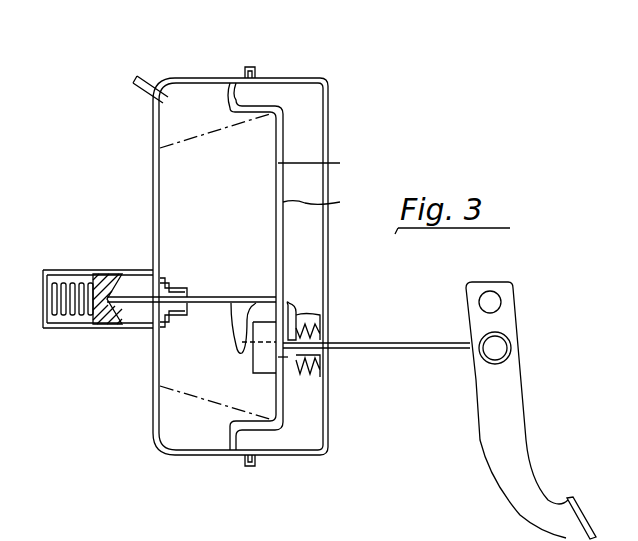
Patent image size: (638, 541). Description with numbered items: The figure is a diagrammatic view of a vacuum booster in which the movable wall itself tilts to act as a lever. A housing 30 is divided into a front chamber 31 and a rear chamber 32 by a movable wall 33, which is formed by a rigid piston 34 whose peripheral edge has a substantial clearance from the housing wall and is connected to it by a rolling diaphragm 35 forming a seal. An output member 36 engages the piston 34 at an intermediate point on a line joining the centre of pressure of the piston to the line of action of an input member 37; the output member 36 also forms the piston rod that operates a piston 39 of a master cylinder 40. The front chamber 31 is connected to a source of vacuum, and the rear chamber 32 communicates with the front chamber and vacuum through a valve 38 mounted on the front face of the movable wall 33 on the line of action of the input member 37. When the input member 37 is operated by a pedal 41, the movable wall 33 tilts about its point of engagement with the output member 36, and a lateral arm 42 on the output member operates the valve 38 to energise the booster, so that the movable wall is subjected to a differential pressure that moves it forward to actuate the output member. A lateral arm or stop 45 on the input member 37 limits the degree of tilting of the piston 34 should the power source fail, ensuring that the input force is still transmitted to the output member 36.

The housing 30 is at (158, 443).
The front chamber 31 is at (228, 262).
The rear chamber 32 is at (312, 261).
The movable wall 33 is at (325, 201).
The rigid piston 34 is at (323, 162).
The rolling diaphragm 35 is at (258, 103).
The output member 36 is at (146, 299).
The input member 37 is at (405, 350).
The valve 38 is at (267, 366).
The piston of master cylinder 39 is at (93, 272).
The master cylinder 40 is at (85, 329).
The pedal 41 is at (505, 378).
The lateral arm 42 is at (228, 337).
The lateral arm or stop 45 is at (320, 320).